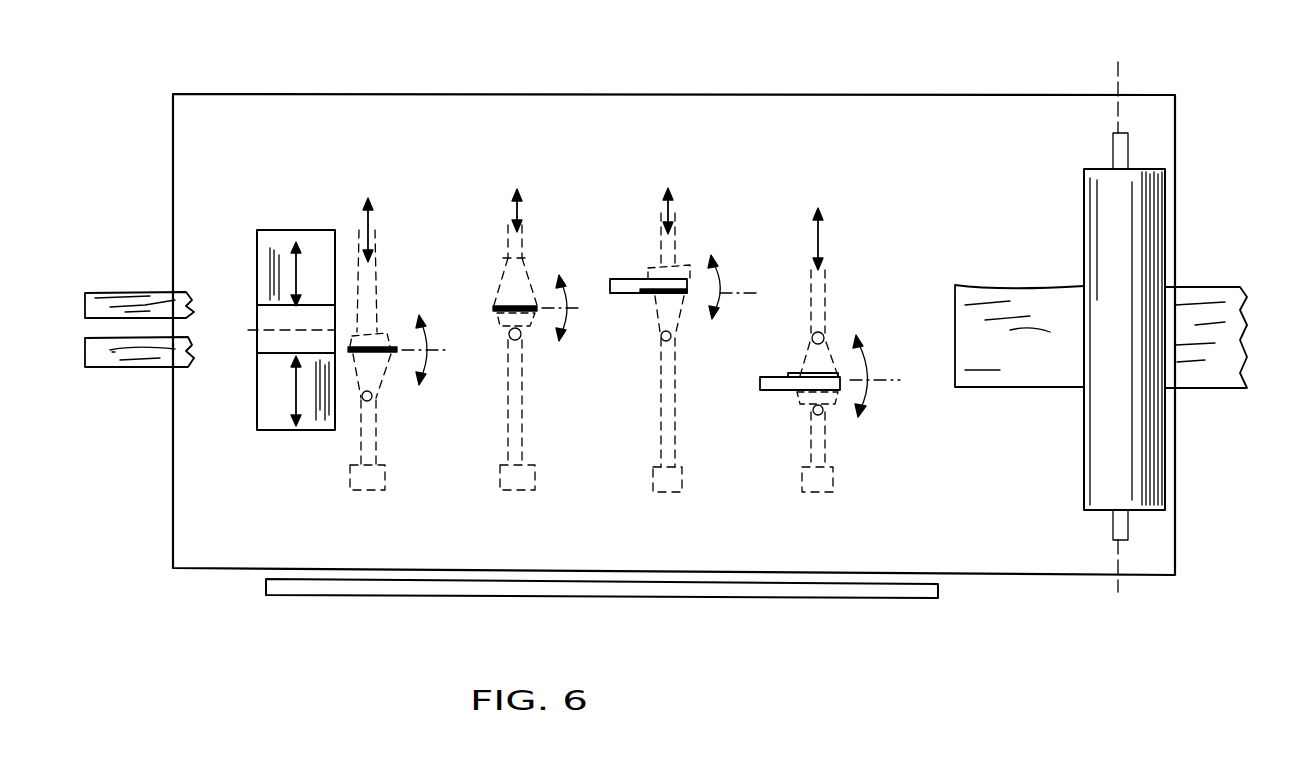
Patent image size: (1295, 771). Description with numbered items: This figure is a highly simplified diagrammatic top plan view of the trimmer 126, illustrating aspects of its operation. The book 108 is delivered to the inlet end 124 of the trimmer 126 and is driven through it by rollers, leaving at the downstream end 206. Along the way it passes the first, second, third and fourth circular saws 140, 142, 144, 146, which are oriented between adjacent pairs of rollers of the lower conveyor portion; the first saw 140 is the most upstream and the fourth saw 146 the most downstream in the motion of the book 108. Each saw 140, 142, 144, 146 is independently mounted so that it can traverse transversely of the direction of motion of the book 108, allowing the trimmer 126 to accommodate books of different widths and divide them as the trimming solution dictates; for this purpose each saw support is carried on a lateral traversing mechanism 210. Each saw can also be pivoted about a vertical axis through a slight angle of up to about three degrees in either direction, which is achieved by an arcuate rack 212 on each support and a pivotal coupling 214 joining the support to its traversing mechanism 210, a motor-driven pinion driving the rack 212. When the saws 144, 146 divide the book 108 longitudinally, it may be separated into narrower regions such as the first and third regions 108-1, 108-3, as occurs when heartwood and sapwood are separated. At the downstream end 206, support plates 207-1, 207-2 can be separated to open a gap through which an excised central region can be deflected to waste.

The trimmer 126 is at (724, 58).
The first narrower region of book 108-1 is at (146, 282).
The third narrower region of book 108-3 is at (150, 378).
The downstream end of trimmer 206 is at (95, 490).
The first support plate 207-1 is at (277, 243).
The second support plate 207-2 is at (272, 418).
The fourth circular saw 146 is at (394, 315).
The third circular saw 144 is at (547, 333).
The second circular saw 142 is at (695, 253).
The first circular saw 140 is at (852, 407).
The lateral traversing mechanism 210 is at (818, 442).
The arcuate rack 212 is at (357, 332).
The pivotal coupling 214 is at (352, 398).
The inlet end of trimmer 124 is at (1197, 415).
The book 108 is at (1007, 268).